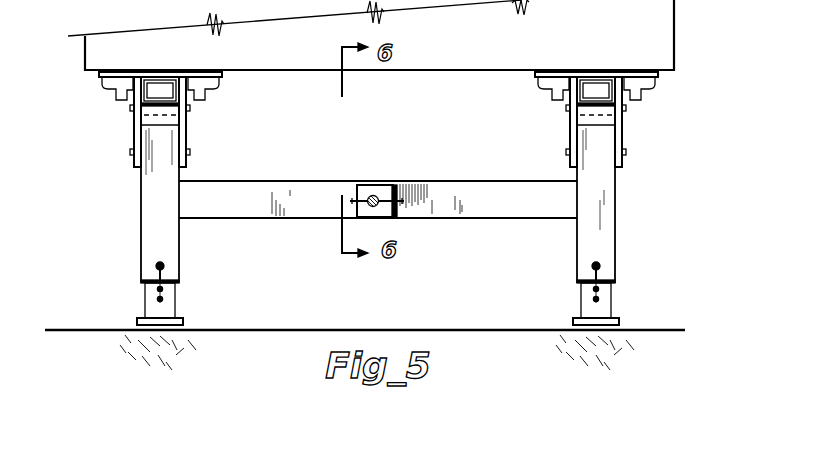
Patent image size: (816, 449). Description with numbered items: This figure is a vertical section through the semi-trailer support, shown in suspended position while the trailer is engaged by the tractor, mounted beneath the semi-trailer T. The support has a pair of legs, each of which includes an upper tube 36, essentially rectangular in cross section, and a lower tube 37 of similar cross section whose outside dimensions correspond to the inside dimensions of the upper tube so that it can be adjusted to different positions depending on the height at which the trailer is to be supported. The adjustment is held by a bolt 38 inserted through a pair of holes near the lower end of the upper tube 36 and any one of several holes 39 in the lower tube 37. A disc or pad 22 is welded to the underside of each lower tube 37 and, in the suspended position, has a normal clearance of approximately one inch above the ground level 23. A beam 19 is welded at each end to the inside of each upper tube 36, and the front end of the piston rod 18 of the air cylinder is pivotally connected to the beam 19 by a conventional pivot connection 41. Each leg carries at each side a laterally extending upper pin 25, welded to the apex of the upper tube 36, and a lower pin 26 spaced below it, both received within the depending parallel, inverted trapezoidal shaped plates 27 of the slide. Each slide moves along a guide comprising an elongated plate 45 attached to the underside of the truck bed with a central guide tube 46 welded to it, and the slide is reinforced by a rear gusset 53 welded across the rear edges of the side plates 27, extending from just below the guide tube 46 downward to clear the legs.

The semi-trailer T is at (675, 50).
The piston rod 18 is at (373, 195).
The beam 19 is at (466, 181).
The disc or pad 22 is at (184, 321).
The ground level 23 is at (371, 330).
The upper pin 25 is at (130, 110).
The lower pin 26 is at (137, 161).
The plates 27 is at (133, 152).
The upper tube 36 is at (141, 232).
The lower tube 37 is at (144, 302).
The bolt 38 is at (164, 272).
The holes 39 is at (164, 299).
The pivot connection 41 is at (388, 196).
The elongated plate 45 is at (633, 74).
The central guide tube 46 is at (592, 79).
The rear gusset 53 is at (605, 118).